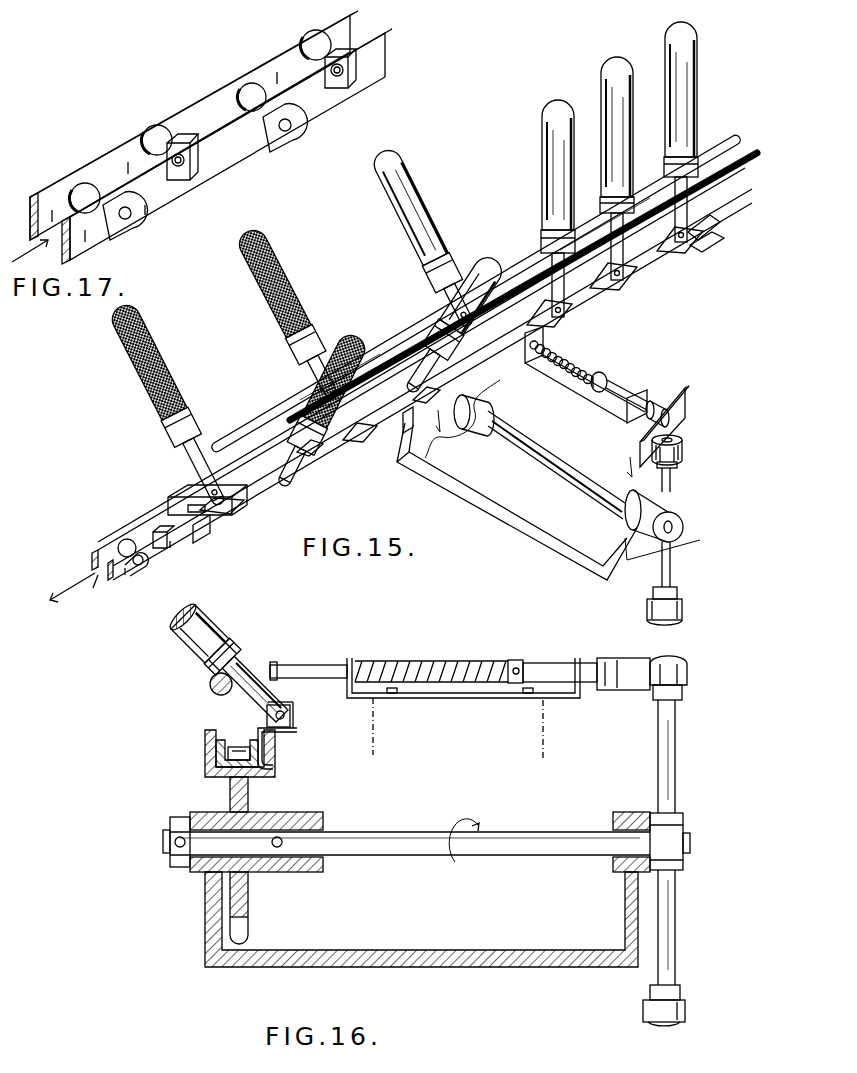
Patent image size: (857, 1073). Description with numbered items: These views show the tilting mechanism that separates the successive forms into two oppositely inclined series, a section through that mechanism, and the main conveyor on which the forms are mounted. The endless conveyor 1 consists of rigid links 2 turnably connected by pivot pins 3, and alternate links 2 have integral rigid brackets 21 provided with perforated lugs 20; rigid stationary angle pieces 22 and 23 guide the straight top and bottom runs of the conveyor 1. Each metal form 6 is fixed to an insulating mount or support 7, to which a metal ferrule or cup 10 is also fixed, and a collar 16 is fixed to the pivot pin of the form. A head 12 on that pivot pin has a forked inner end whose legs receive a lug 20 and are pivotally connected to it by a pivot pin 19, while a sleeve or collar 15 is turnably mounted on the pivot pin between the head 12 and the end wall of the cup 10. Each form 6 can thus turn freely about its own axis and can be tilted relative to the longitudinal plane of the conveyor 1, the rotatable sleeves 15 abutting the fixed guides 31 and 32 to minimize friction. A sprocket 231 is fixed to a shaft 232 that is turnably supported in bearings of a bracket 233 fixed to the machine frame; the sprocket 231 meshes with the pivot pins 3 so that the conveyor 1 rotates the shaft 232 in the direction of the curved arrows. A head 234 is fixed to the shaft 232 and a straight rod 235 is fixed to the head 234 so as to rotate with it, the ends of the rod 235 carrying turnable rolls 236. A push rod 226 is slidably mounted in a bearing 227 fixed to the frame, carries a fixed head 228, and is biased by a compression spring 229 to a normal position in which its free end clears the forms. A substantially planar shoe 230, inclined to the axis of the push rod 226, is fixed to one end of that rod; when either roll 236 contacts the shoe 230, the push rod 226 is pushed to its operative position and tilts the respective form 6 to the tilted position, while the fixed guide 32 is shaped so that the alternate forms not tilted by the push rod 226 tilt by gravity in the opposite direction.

In FIG. 17, the endless conveyor 1 is at (26, 257).
In FIG. 15, the endless conveyor 1 is at (74, 589).
In FIG. 17, the rigid link 2 is at (40, 200).
In FIG. 15, the rigid link 2 is at (106, 556).
In FIG. 17, the pivot pin 3 is at (75, 190).
In FIG. 15, the pivot pin 3 is at (138, 542).
In FIG. 15, the metal form 6 is at (403, 184).
In FIG. 16, the metal form 6 is at (170, 632).
In FIG. 15, the insulating mount or support 7 is at (440, 268).
In FIG. 16, the insulating mount or support 7 is at (188, 655).
In FIG. 15, the metal ferrule or cup 10 is at (443, 280).
In FIG. 16, the metal ferrule or cup 10 is at (208, 665).
In FIG. 15, the head 12 is at (716, 228).
In FIG. 16, the head 12 is at (267, 708).
In FIG. 15, the sleeve or collar 15 is at (450, 298).
In FIG. 16, the sleeve or collar 15 is at (240, 660).
In FIG. 15, the collar 16 is at (412, 204).
In FIG. 16, the pivot pin 19 is at (274, 716).
In FIG. 17, the perforated lug 20 is at (193, 172).
In FIG. 15, the perforated lug 20 is at (170, 545).
In FIG. 16, the perforated lug 20 is at (292, 710).
In FIG. 17, the rigid bracket 21 is at (162, 205).
In FIG. 15, the rigid bracket 21 is at (152, 556).
In FIG. 16, the rigid bracket 21 is at (298, 729).
In FIG. 15, the angle piece 22 is at (208, 535).
In FIG. 16, the angle piece 22 is at (270, 770).
In FIG. 15, the angle piece 23 is at (185, 496).
In FIG. 16, the angle piece 23 is at (207, 733).
In FIG. 15, the fixed guide 31 is at (228, 440).
In FIG. 16, the fixed guide 31 is at (210, 687).
In FIG. 15, the fixed guide 32 is at (752, 153).
In FIG. 15, the push rod 226 is at (624, 392).
In FIG. 16, the push rod 226 is at (312, 658).
In FIG. 15, the bearing 227 is at (585, 393).
In FIG. 16, the bearing 227 is at (425, 697).
In FIG. 15, the head 228 is at (603, 374).
In FIG. 16, the head 228 is at (518, 660).
In FIG. 15, the compression spring 229 is at (556, 348).
In FIG. 16, the compression spring 229 is at (490, 653).
In FIG. 15, the shoe 230 is at (678, 418).
In FIG. 16, the shoe 230 is at (635, 650).
In FIG. 15, the sprocket 231 is at (430, 462).
In FIG. 16, the sprocket 231 is at (250, 798).
In FIG. 15, the shaft 232 is at (553, 470).
In FIG. 16, the shaft 232 is at (396, 826).
In FIG. 15, the bracket 233 is at (565, 545).
In FIG. 16, the bracket 233 is at (440, 949).
In FIG. 15, the head 234 is at (684, 520).
In FIG. 16, the head 234 is at (685, 818).
In FIG. 15, the straight rod 235 is at (672, 480).
In FIG. 16, the straight rod 235 is at (676, 755).
In FIG. 15, the turnable roll 236 is at (684, 438).
In FIG. 16, the turnable roll 236 is at (688, 673).